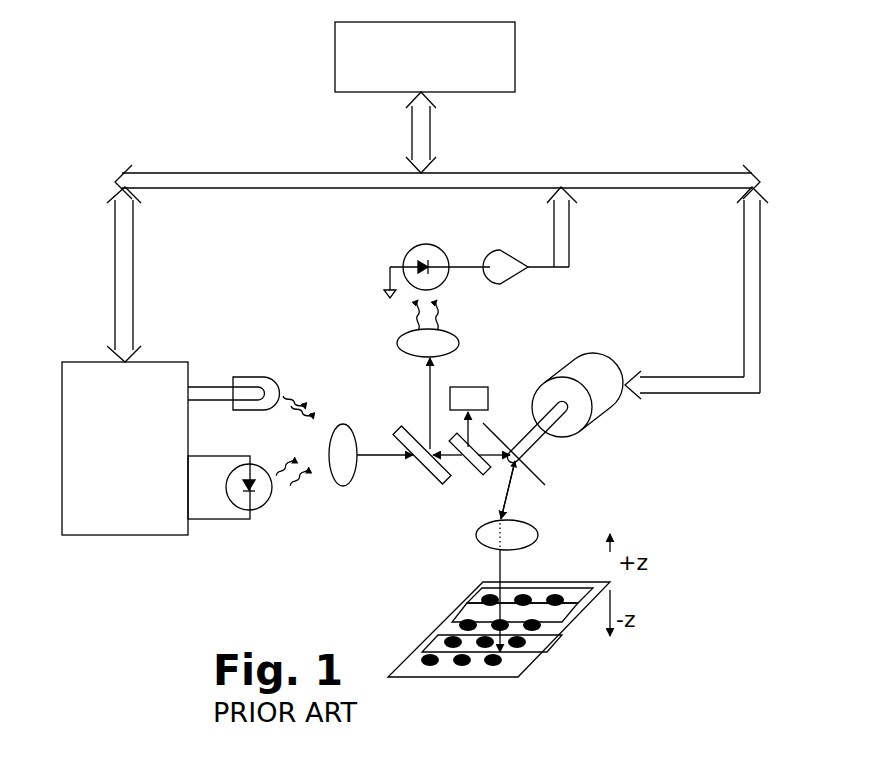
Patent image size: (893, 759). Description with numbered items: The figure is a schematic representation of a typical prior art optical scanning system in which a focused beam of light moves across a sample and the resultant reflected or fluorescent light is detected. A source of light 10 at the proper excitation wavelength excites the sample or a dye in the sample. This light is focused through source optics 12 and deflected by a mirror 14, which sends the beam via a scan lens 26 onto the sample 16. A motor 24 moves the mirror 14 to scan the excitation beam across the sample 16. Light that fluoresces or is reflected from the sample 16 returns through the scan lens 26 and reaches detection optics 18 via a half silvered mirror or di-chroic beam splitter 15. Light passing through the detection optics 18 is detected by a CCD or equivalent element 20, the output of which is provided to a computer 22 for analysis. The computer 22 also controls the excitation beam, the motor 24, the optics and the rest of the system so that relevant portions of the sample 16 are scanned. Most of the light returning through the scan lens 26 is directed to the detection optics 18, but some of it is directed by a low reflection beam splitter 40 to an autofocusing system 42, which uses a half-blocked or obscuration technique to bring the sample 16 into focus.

The source of light 10 is at (266, 358).
The source optics 12 is at (347, 423).
The mirror 14 is at (540, 454).
The half silvered mirror or di-chroic beam splitter 15 is at (424, 468).
The sample 16 is at (467, 594).
The detection optics 18 is at (461, 340).
The CCD or equivalent element 20 is at (410, 252).
The computer 22 is at (456, 57).
The motor 24 is at (596, 354).
The scan lens 26 is at (533, 522).
The low reflection beam splitter 40 is at (468, 467).
The autofocusing system 42 is at (488, 400).